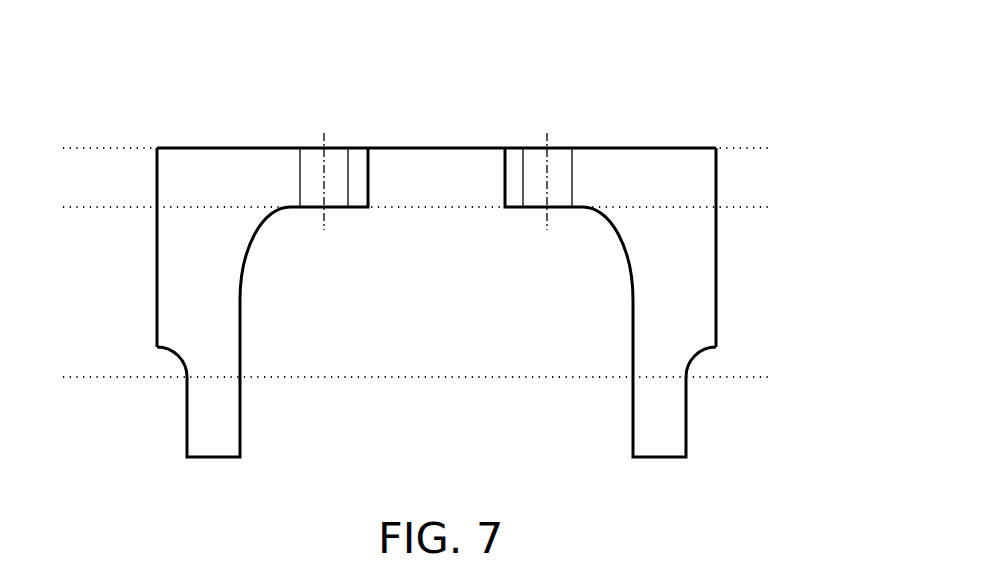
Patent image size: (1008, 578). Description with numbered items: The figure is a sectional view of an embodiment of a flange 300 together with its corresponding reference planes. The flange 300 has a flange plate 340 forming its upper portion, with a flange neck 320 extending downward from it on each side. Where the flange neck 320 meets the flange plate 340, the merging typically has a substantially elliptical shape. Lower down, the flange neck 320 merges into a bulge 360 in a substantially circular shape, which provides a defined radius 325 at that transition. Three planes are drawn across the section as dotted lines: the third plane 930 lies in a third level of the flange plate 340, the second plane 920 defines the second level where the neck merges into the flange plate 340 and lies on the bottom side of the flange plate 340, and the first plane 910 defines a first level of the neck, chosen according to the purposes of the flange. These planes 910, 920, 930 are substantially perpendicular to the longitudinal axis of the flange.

The flange 300 is at (610, 117).
The flange plate 340 is at (207, 170).
The bulge 360 is at (705, 295).
The flange neck 320 is at (657, 415).
The defined radius 325 is at (178, 357).
The third plane 930 is at (454, 156).
The second plane 920 is at (454, 211).
The first plane 910 is at (456, 381).